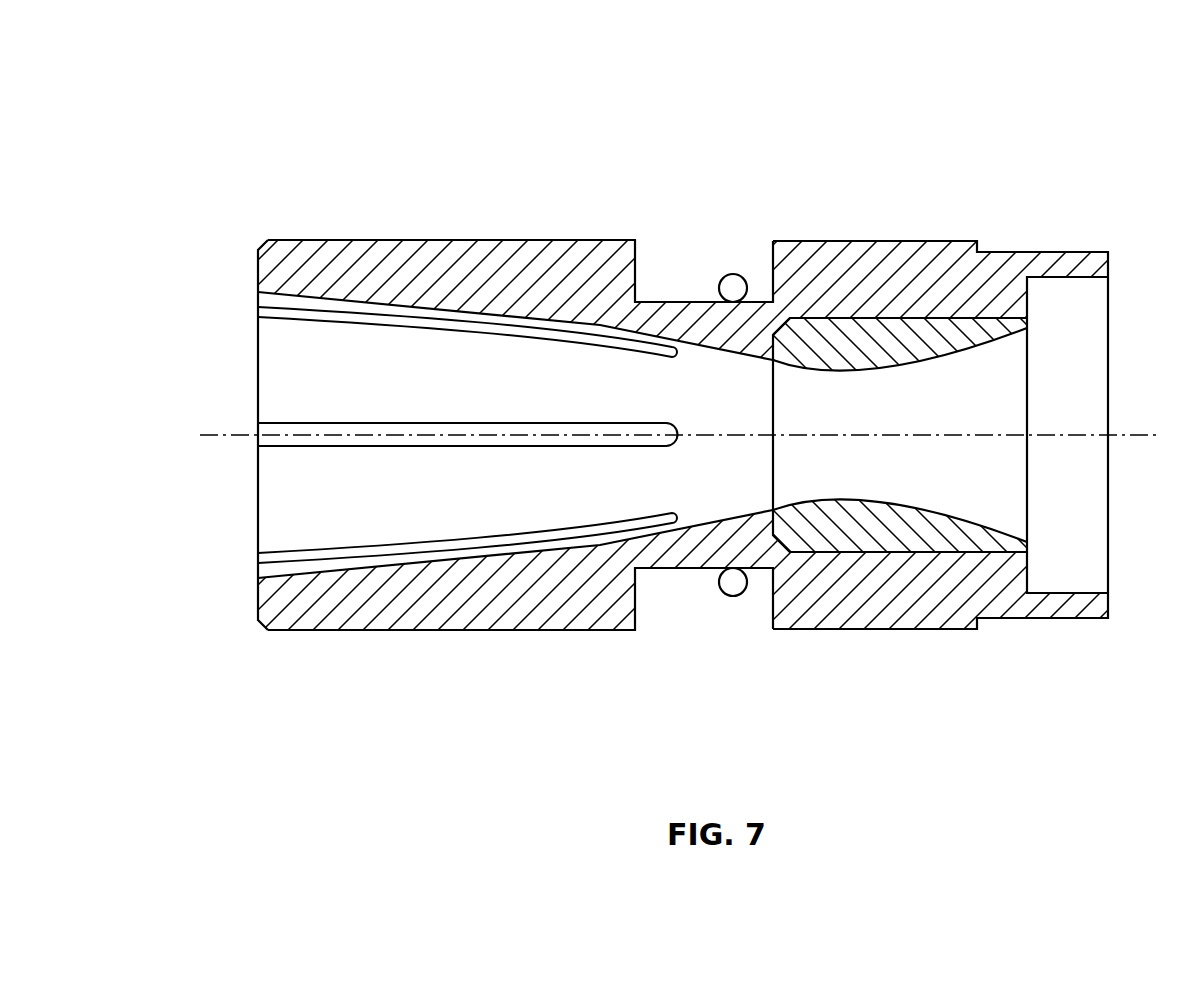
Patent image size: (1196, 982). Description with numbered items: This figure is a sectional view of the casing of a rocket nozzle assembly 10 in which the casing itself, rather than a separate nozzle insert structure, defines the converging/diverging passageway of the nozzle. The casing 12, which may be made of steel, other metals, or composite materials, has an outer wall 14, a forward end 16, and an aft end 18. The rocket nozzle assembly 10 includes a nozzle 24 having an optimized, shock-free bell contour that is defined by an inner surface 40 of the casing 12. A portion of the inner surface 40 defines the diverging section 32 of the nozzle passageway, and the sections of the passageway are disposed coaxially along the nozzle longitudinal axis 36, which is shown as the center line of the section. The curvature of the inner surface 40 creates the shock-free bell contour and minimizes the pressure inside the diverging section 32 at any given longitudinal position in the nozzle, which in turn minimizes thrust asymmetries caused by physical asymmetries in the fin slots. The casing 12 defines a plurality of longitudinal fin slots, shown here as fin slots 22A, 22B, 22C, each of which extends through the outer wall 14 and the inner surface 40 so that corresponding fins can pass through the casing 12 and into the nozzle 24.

The rocket nozzle assembly 10 is at (983, 82).
The casing 12 is at (1027, 252).
The outer wall 14 is at (520, 240).
The forward end 16 is at (1112, 280).
The aft end 18 is at (262, 280).
The longitudinal fin slot 22A is at (327, 303).
The longitudinal fin slot 22B is at (400, 432).
The longitudinal fin slot 22C is at (345, 548).
The nozzle 24 is at (952, 494).
The diverging section 32 is at (547, 389).
The nozzle longitudinal axis 36 is at (937, 430).
The inner surface 40 is at (753, 355).